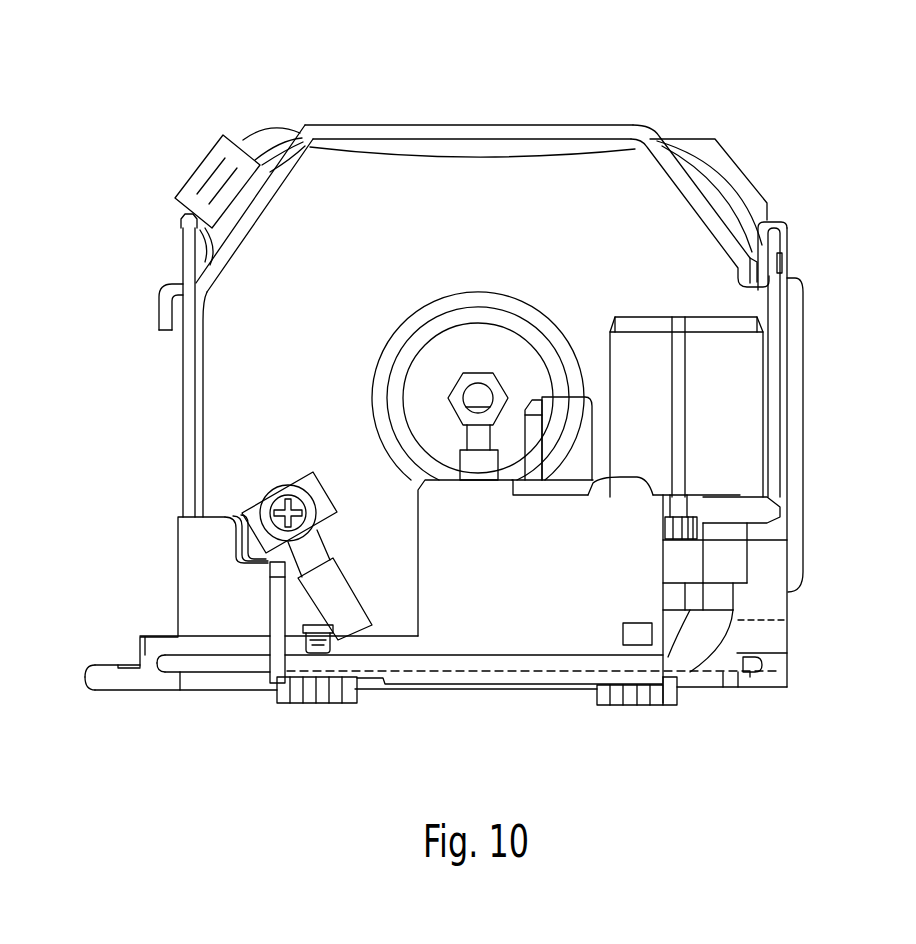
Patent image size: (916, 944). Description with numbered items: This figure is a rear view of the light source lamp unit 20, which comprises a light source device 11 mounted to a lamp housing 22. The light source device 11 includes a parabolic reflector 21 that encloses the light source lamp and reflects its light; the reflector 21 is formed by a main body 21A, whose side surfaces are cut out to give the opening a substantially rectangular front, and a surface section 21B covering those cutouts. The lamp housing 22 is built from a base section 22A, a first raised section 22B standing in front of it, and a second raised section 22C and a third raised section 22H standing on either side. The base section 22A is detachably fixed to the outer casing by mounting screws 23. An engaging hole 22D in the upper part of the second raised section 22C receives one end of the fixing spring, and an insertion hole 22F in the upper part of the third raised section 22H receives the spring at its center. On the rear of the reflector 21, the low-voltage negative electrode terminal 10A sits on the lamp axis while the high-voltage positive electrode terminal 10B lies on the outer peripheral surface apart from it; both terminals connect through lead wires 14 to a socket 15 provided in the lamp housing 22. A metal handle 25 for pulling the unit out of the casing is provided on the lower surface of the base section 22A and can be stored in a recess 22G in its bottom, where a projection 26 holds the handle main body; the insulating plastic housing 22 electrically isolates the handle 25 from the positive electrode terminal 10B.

The light source lamp unit 20 is at (148, 76).
The parabolic reflector 21 is at (458, 227).
The main body 21A is at (383, 170).
The surface section 21B is at (510, 152).
The light source device 11 is at (664, 118).
The lamp housing 22 is at (411, 704).
The base section 22A is at (512, 677).
The first raised section 22B is at (723, 162).
The second raised section 22C is at (187, 383).
The engaging hole 22D is at (185, 262).
The insertion hole 22F is at (773, 292).
The recess 22G is at (773, 653).
The third raised section 22H is at (782, 457).
The negative electrode terminal 10A is at (479, 395).
The positive electrode terminal 10B is at (290, 484).
The lead wires 14 is at (483, 482).
The socket 15 is at (725, 392).
The mounting screws 23 is at (299, 703).
The handle 25 is at (714, 667).
The projection 26 is at (751, 677).